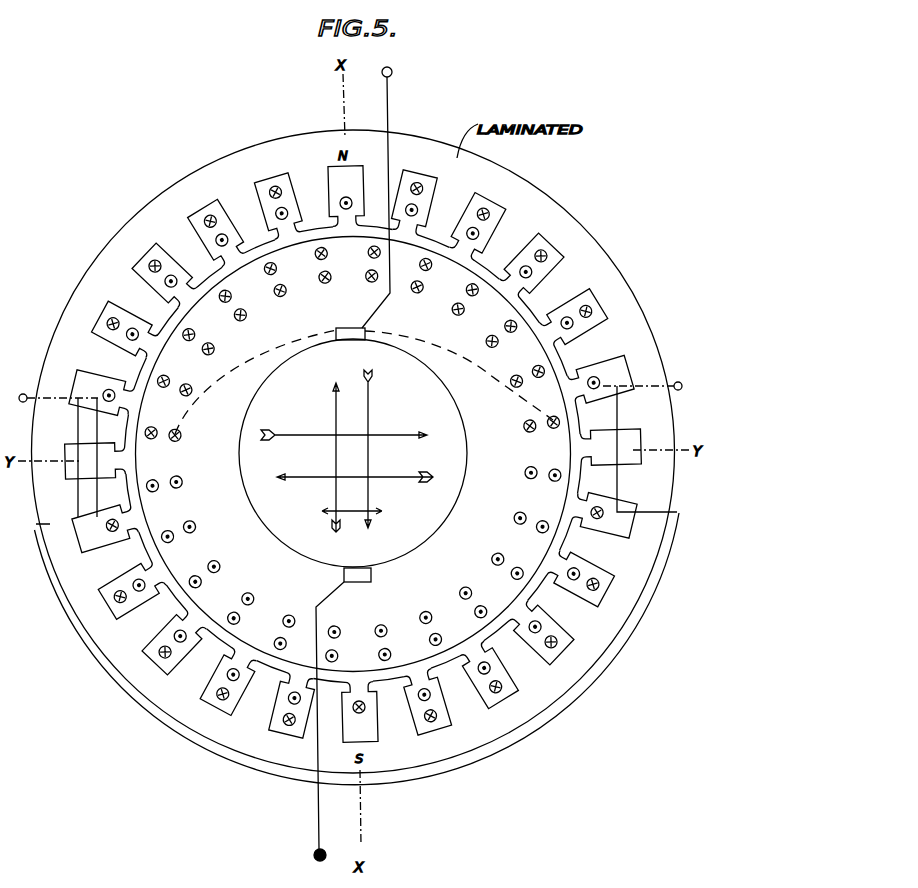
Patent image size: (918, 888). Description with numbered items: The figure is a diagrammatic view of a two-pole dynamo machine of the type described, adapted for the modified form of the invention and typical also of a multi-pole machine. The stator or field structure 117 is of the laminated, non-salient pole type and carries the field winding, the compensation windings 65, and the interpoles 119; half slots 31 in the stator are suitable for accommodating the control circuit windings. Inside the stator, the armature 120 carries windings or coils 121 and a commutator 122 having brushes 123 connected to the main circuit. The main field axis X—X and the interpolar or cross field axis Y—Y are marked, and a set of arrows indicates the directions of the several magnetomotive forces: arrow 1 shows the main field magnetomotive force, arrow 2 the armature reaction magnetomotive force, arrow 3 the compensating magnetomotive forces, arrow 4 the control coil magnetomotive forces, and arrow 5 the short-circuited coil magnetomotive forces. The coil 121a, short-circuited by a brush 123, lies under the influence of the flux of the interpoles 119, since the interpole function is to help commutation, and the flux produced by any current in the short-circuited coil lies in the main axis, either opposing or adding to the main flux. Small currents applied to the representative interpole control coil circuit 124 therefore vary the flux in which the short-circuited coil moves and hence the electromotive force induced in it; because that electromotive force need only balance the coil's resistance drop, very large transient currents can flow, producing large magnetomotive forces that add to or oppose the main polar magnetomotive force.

The stator or field structure 117 is at (173, 207).
The arrow 4 is at (147, 264).
The compensation windings 65 is at (163, 281).
The brushes 123 is at (350, 327).
The commutator 122 is at (393, 373).
The coil 121a is at (488, 375).
The half slots 31 is at (612, 366).
The interpoles 119 is at (73, 437).
The windings or coils 121 is at (237, 616).
The armature 120 is at (213, 592).
The interpole control coil circuit 124 is at (575, 696).
The arrow 1 is at (370, 398).
The arrow 2 is at (315, 479).
The arrow 3 is at (382, 435).
The arrow 5 is at (333, 397).